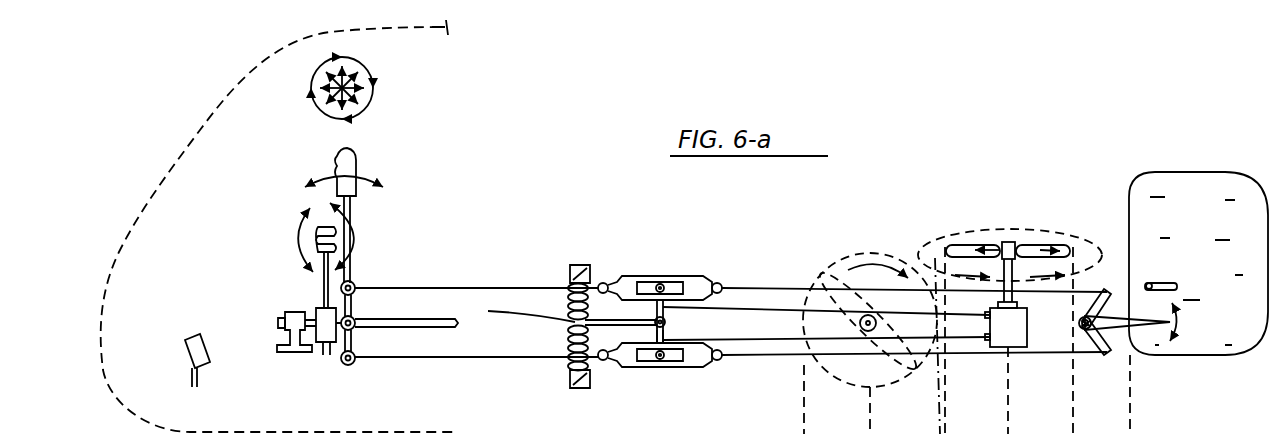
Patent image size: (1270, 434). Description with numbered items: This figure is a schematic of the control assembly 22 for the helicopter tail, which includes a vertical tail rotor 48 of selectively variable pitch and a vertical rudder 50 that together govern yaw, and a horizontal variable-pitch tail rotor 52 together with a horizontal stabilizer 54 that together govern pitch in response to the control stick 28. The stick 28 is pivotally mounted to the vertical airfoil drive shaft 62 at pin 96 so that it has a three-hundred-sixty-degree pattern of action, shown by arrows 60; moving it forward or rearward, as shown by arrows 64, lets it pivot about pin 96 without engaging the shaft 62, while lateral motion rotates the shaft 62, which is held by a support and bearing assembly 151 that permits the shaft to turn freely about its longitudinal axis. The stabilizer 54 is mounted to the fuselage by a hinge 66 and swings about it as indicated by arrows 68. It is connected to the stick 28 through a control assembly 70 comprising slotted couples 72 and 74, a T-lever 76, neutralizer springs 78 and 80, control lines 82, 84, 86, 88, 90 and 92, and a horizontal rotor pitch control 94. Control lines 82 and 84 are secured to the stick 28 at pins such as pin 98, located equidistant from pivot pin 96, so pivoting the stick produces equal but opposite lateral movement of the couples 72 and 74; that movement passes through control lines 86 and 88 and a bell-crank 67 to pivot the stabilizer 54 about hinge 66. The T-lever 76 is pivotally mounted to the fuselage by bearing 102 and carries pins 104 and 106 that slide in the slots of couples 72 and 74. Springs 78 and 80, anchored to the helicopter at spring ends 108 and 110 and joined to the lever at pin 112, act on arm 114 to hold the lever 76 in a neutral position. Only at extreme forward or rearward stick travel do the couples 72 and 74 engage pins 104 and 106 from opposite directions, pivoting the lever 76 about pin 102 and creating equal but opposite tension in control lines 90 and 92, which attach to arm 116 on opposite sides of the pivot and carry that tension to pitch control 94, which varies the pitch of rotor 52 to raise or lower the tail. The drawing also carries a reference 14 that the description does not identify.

The enclosure / housing boundary 14 is at (178, 148).
The control assembly 22 is at (1032, 190).
The control stick 28 is at (355, 172).
The vertical tail rotor 48 is at (845, 280).
The vertical rudder 50 is at (1180, 185).
The horizontal tail rotor 52 is at (1082, 248).
The horizontal stabilizer 54 is at (1131, 365).
The arrows 60 is at (387, 85).
The vertical airfoil drive shaft 62 is at (384, 322).
The arrows 64 is at (333, 172).
The hinge 66 is at (1078, 327).
The bell-crank 67 is at (1097, 345).
The arrows 68 is at (1182, 322).
The control assembly 70 is at (660, 301).
The slotted couple 72 is at (636, 252).
The slotted couple 74 is at (631, 364).
The T-lever 76 is at (652, 318).
The neutralizer spring 78 is at (567, 305).
The neutralizer spring 80 is at (567, 343).
The control line 82 is at (392, 288).
The control line 84 is at (385, 358).
The control line 86 is at (740, 290).
The control line 88 is at (733, 358).
The control line 90 is at (740, 311).
The control line 92 is at (740, 345).
The horizontal rotor pitch control 94 is at (1015, 335).
The pin 96 is at (345, 329).
The pin 98 is at (354, 284).
The bearing 102 is at (668, 318).
The pin 104 is at (665, 282).
The pin 106 is at (662, 362).
The spring end 108 is at (572, 380).
The spring end 110 is at (351, 364).
The pin 112 is at (519, 307).
The arm 114 is at (632, 326).
The arm 116 is at (653, 335).
The support and bearing assembly 151 is at (216, 305).